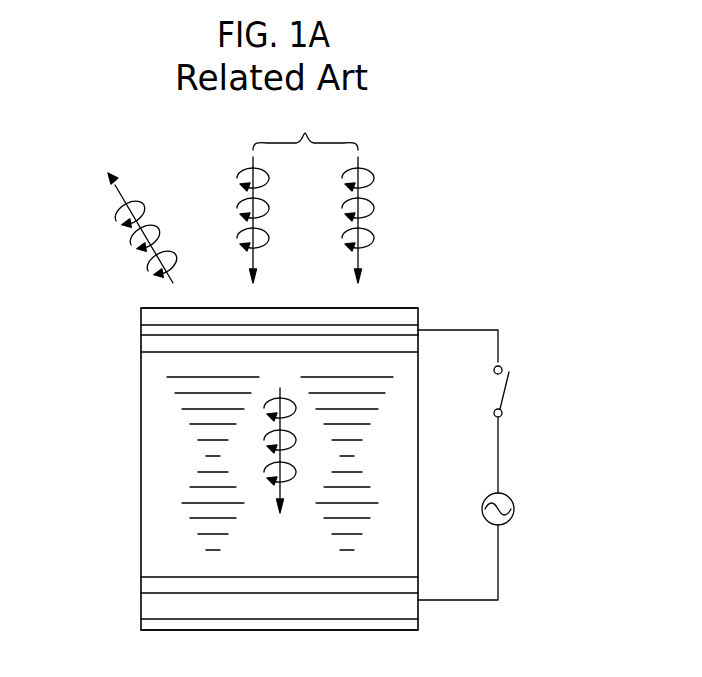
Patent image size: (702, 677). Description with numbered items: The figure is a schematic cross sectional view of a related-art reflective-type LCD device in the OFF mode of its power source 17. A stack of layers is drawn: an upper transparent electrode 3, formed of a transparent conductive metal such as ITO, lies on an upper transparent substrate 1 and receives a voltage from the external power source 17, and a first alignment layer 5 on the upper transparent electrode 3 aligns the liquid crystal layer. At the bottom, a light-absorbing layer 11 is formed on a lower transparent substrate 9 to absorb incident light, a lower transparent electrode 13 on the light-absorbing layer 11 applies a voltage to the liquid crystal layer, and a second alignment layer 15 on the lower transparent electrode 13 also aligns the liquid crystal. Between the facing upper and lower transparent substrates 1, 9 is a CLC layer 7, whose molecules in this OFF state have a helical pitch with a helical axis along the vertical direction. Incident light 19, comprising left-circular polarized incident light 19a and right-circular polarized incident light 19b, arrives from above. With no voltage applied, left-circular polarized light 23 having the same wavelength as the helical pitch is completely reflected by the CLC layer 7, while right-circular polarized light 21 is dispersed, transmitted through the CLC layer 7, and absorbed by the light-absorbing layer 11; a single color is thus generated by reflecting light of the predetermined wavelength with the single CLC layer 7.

The upper transparent substrate 1 is at (141, 312).
The upper transparent electrode 3 is at (141, 333).
The first alignment layer 5 is at (141, 352).
The CLC layer 7 is at (143, 465).
The lower transparent substrate 9 is at (141, 628).
The light-absorbing layer 11 is at (141, 615).
The lower transparent electrode 13 is at (141, 597).
The second alignment layer 15 is at (141, 582).
The power source 17 is at (513, 515).
The incident light 19 is at (334, 196).
The left-circular polarized incident light 19a is at (253, 222).
The right-circular polarized incident light 19b is at (358, 222).
The right-circular polarized light 21 is at (278, 421).
The left-circular polarized light 23 is at (120, 190).